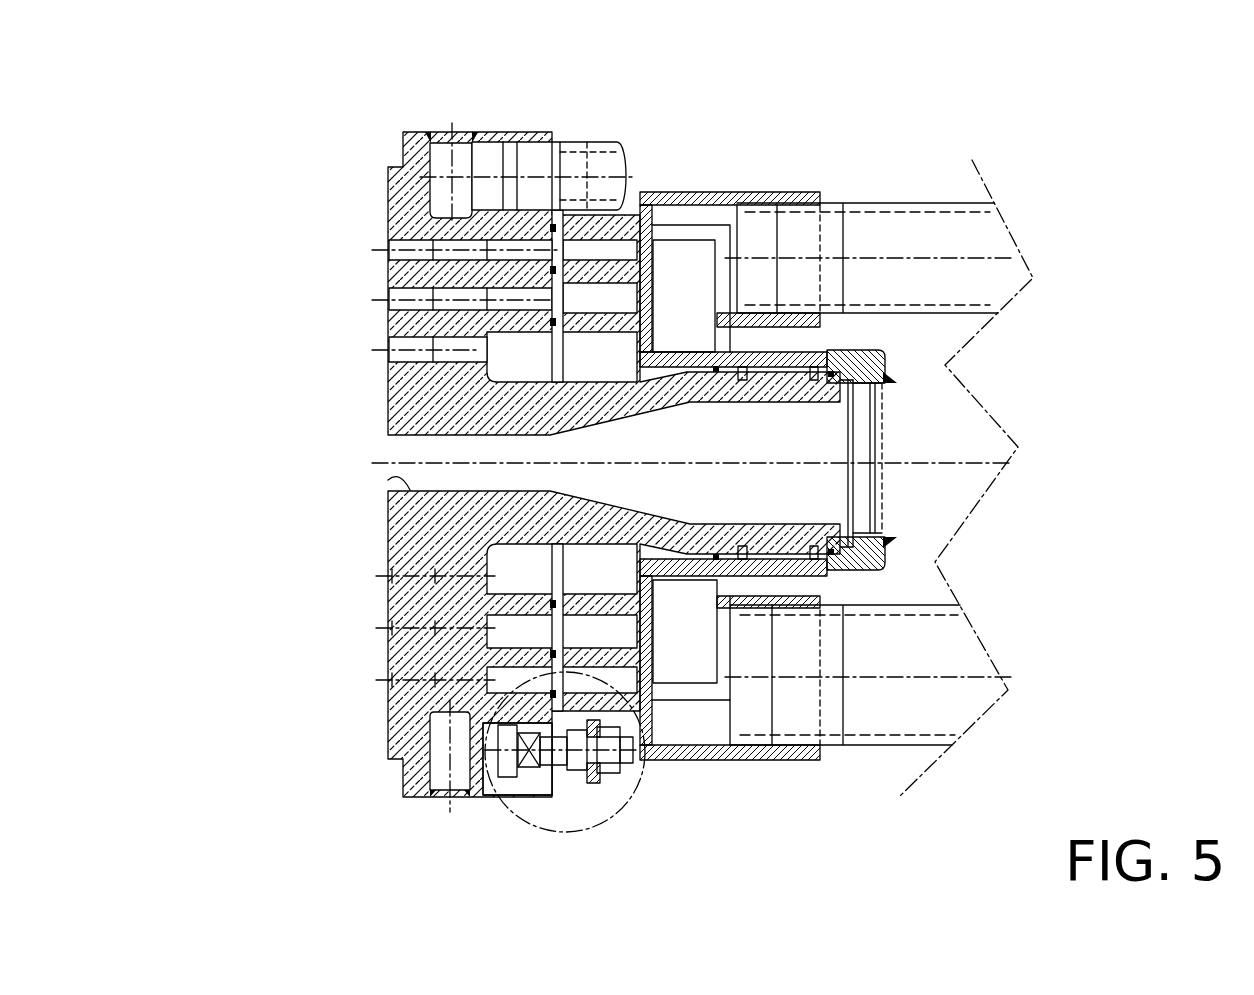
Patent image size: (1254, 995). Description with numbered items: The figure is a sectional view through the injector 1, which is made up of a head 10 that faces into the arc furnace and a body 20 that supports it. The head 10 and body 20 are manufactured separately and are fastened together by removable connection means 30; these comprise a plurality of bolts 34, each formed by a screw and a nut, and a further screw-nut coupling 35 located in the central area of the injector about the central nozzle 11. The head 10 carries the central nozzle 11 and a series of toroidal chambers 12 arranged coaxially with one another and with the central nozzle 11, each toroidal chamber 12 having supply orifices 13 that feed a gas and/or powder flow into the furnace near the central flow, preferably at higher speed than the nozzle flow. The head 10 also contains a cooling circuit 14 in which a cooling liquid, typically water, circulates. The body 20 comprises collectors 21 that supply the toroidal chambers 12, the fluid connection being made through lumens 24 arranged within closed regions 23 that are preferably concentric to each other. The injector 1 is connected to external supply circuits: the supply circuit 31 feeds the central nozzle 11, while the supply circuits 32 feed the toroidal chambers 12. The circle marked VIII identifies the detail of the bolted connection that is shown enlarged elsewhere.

The injector 1 is at (332, 116).
The head 10 is at (378, 718).
The central nozzle 11 is at (388, 480).
The toroidal chambers 12 is at (387, 350).
The supply orifices 13 is at (388, 243).
The cooling circuit 14 is at (441, 168).
The body 20 is at (747, 184).
The collectors 21 is at (686, 262).
The closed regions 23 is at (595, 160).
The lumens 24 is at (660, 670).
The removable connection means 30 is at (503, 770).
The supply circuit of the central nozzle 31 is at (897, 388).
The supply circuits of the toroidal chambers 32 is at (968, 204).
The bolts 34 is at (612, 770).
The screw-nut coupling 35 is at (853, 350).
The detail VIII is at (633, 816).